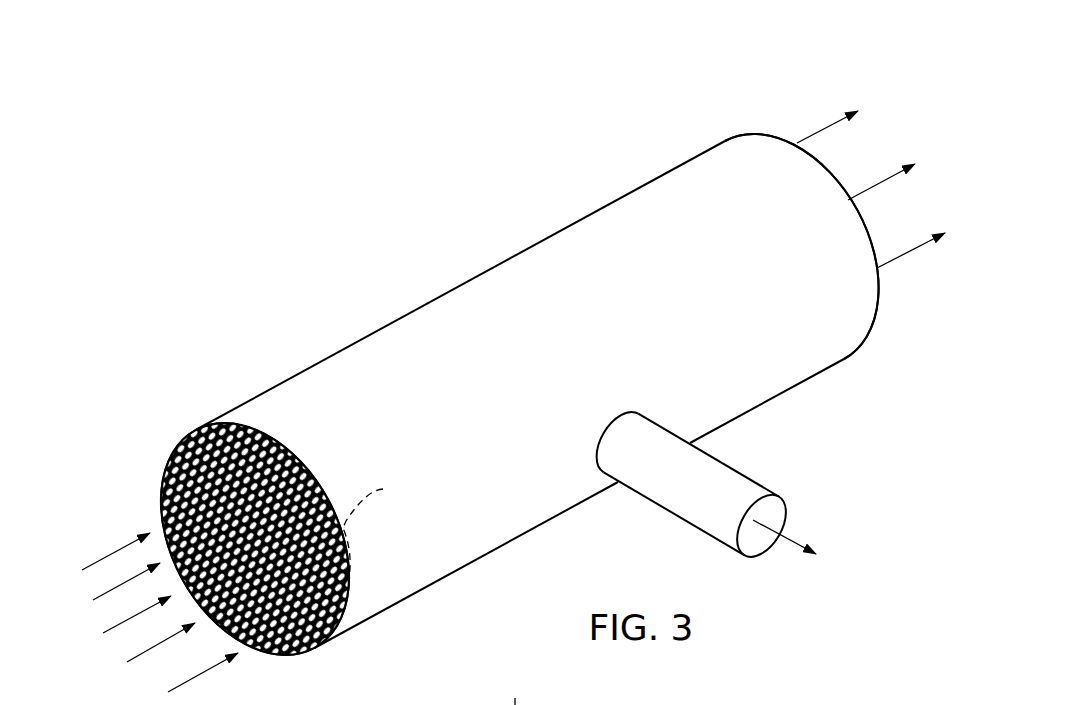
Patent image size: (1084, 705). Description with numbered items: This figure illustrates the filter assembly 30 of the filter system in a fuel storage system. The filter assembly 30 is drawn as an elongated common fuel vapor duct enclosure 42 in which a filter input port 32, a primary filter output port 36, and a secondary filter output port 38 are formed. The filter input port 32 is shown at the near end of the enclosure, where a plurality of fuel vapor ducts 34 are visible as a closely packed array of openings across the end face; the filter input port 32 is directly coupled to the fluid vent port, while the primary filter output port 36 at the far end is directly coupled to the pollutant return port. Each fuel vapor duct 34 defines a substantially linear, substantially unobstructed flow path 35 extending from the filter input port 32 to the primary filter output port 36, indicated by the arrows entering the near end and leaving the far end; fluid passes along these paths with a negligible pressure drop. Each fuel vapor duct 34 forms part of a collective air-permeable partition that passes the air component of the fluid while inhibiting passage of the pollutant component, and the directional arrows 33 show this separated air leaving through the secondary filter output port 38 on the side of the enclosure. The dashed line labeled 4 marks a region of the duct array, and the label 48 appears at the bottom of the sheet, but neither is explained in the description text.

The filter assembly 30 is at (514, 359).
The filter input port 32 is at (182, 411).
The fuel vapor ducts 34 is at (292, 651).
The substantially unobstructed flow path 35 is at (183, 682).
The primary filter output port 36 is at (804, 96).
The secondary filter output port 38 is at (745, 471).
The directional arrows 33 is at (794, 540).
The common fuel vapor duct enclosure 42 is at (426, 300).
The detail section of honeycomb cells 4 is at (374, 523).
The lower component 48 is at (512, 688).